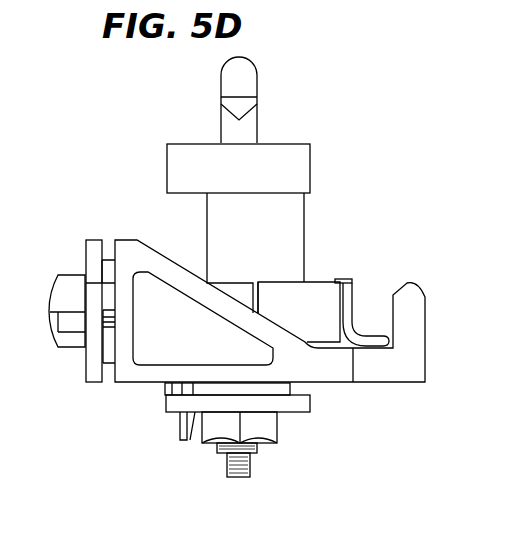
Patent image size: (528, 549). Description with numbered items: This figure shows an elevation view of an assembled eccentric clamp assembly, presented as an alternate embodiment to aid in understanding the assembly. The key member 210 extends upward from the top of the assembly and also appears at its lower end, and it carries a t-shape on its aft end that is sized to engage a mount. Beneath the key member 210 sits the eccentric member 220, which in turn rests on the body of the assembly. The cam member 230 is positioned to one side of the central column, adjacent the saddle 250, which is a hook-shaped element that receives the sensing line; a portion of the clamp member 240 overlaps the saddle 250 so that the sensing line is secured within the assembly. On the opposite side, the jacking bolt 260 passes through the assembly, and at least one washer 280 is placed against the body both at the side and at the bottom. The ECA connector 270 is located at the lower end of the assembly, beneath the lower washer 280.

The key member 210 is at (222, 61).
The eccentric member 220 is at (308, 146).
The cam member 230 is at (317, 280).
The clamp member 240 is at (425, 311).
The saddle 250 is at (355, 293).
The jacking bolt 260 is at (53, 343).
The ECA connector 270 is at (277, 443).
The washer 280 is at (92, 384).